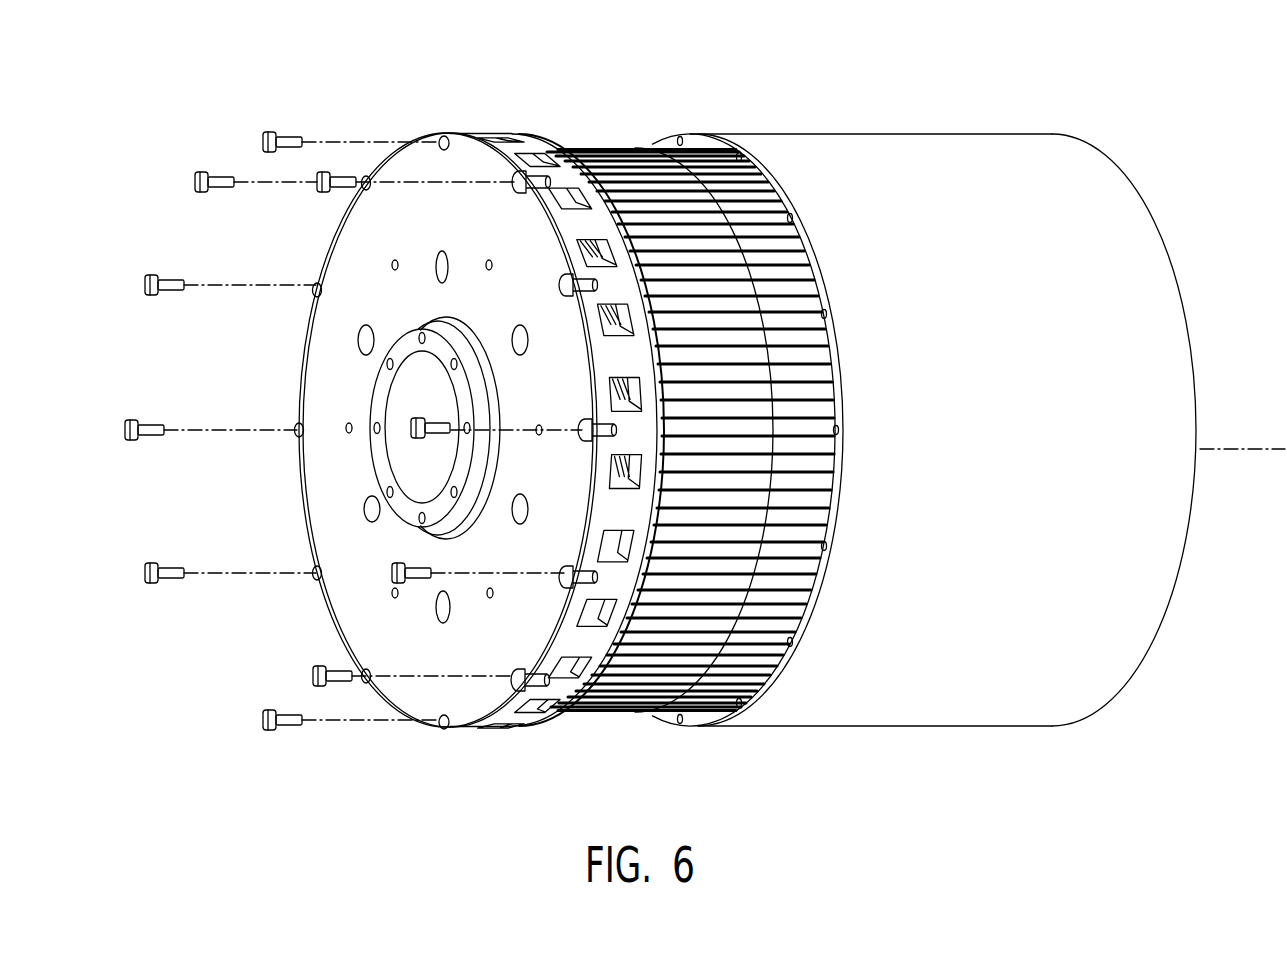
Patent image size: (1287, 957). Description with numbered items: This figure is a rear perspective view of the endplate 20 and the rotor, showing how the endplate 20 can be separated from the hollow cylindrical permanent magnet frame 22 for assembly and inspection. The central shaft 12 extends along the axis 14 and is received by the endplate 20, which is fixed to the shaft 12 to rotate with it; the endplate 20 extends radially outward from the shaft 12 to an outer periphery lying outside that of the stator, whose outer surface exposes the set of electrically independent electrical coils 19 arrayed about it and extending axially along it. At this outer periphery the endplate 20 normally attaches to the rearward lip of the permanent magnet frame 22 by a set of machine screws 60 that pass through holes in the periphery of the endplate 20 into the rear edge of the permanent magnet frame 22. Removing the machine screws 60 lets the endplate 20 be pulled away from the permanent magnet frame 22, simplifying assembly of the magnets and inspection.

The central shaft 12 is at (407, 483).
The axis 14 is at (1237, 449).
The electrical coils 19 is at (743, 475).
The endplate 20 is at (422, 164).
The permanent magnet frame 22 is at (902, 155).
The machine screws 60 is at (290, 131).